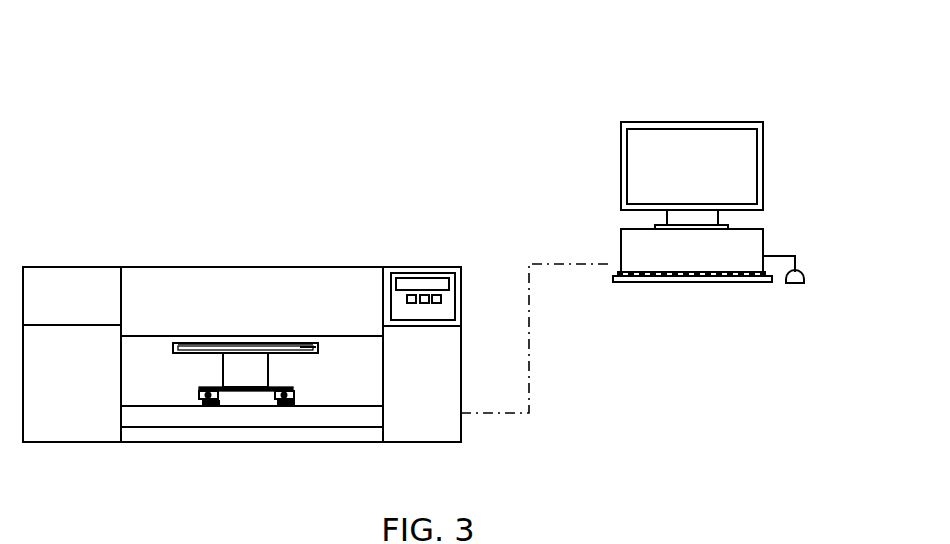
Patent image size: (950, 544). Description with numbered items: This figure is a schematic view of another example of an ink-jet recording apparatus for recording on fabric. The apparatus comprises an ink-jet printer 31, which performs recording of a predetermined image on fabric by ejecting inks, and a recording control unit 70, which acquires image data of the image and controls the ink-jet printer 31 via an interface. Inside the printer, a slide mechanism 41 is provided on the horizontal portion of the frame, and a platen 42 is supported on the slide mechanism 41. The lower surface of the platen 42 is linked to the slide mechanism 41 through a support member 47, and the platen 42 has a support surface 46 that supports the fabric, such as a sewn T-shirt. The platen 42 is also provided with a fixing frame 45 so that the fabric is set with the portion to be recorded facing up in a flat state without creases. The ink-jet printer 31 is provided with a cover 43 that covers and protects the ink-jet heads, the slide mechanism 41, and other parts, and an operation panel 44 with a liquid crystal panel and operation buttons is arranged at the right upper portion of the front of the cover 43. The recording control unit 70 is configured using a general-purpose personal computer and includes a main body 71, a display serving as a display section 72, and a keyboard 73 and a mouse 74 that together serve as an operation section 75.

The ink-jet printer 31 is at (462, 223).
The slide mechanism 41 is at (200, 405).
The platen 42 is at (207, 353).
The cover 43 is at (171, 267).
The operation panel 44 is at (457, 300).
The fixing frame 45 is at (318, 343).
The support surface 46 is at (207, 343).
The support member 47 is at (262, 374).
The recording control unit 70 is at (722, 207).
The main body 71 is at (763, 247).
The display section 72 is at (757, 172).
The keyboard 73 is at (755, 283).
The mouse 74 is at (792, 284).
The operation section 75 is at (713, 328).